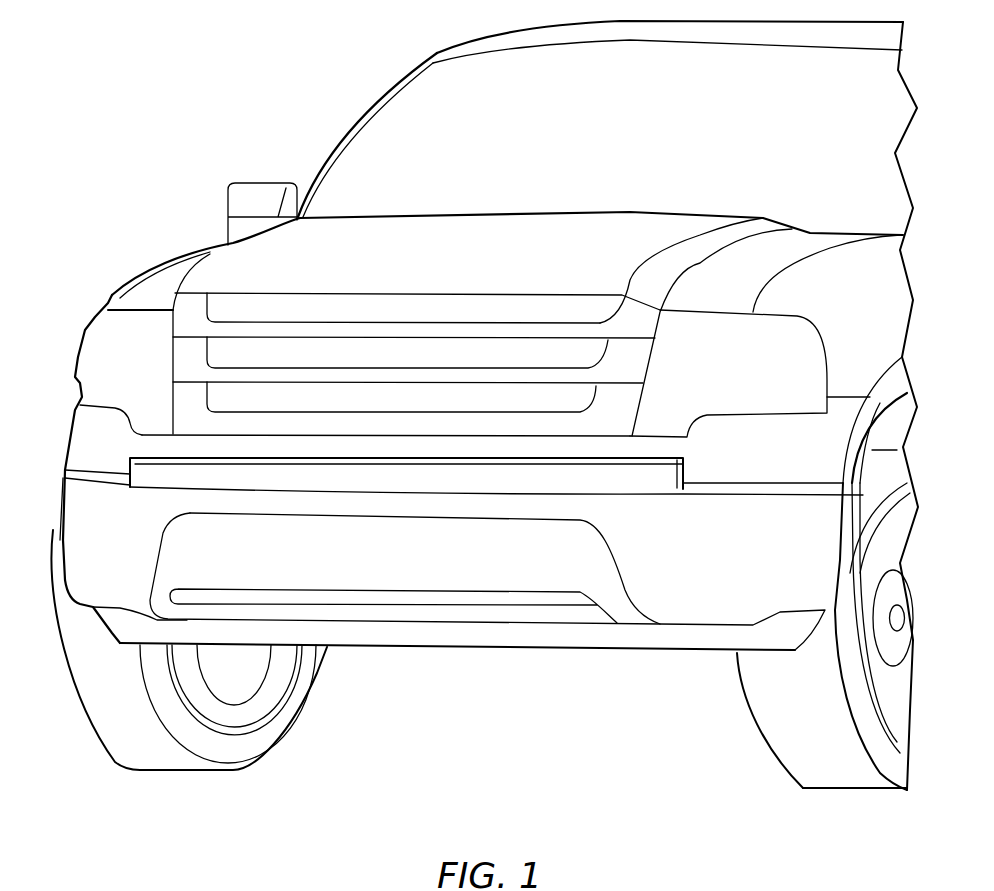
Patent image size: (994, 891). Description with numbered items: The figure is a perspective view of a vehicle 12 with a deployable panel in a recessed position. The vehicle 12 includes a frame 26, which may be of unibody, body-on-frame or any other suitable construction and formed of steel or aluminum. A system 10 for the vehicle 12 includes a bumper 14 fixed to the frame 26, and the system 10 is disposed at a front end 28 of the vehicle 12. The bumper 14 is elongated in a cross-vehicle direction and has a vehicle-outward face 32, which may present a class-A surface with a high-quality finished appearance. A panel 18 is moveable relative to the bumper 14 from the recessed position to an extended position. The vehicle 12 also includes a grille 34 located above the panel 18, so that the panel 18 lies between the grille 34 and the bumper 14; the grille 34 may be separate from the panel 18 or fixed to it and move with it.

The system 10 is at (123, 467).
The vehicle 12 is at (373, 111).
The bumper 14 is at (110, 553).
The panel 18 is at (302, 495).
The frame 26 is at (853, 295).
The front end 28 is at (531, 504).
The vehicle-outward face 32 is at (406, 516).
The grille 34 is at (190, 353).